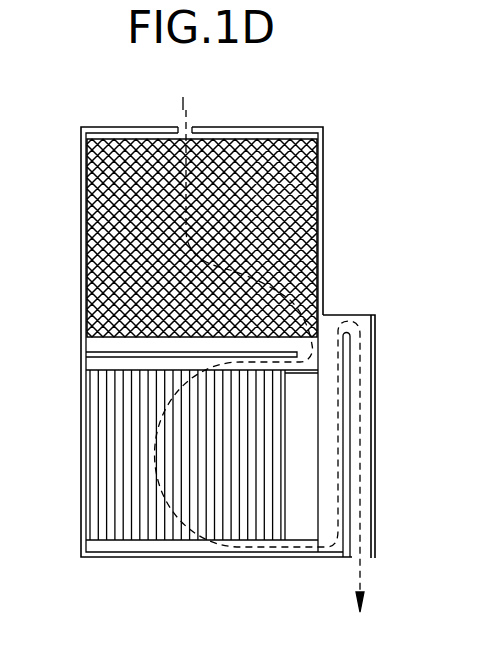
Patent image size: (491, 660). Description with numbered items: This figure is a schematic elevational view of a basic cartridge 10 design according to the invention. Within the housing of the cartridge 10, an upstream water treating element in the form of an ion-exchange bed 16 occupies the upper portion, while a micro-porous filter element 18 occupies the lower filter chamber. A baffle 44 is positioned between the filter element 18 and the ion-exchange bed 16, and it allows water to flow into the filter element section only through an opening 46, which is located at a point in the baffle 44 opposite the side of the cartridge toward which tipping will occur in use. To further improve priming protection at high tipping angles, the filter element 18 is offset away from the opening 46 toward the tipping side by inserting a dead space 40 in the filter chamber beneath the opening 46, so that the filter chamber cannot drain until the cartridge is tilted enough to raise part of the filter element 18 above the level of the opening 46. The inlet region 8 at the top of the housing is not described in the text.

The cartridge 10 is at (72, 160).
The inlet 8 is at (182, 108).
The ion-exchange bed 16 is at (93, 241).
The baffle 44 is at (97, 347).
The filter element 18 is at (100, 502).
The dead space 40 is at (307, 497).
The opening 46 is at (303, 342).